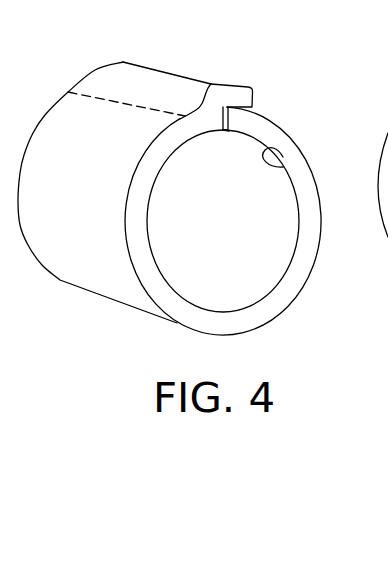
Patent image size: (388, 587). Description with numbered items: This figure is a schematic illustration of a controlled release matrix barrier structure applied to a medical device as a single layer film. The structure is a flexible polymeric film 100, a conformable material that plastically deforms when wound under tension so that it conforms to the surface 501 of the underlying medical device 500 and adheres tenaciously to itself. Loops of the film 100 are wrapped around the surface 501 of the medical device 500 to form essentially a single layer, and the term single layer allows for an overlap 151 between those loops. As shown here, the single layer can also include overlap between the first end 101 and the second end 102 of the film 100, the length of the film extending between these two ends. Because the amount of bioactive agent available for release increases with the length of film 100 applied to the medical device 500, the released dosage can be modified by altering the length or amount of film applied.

The flexible polymeric film 100 is at (150, 67).
The overlap 151 is at (232, 84).
The second end 102 is at (250, 107).
The first end 101 is at (230, 131).
The medical device 500 is at (267, 262).
The surface 501 is at (283, 167).